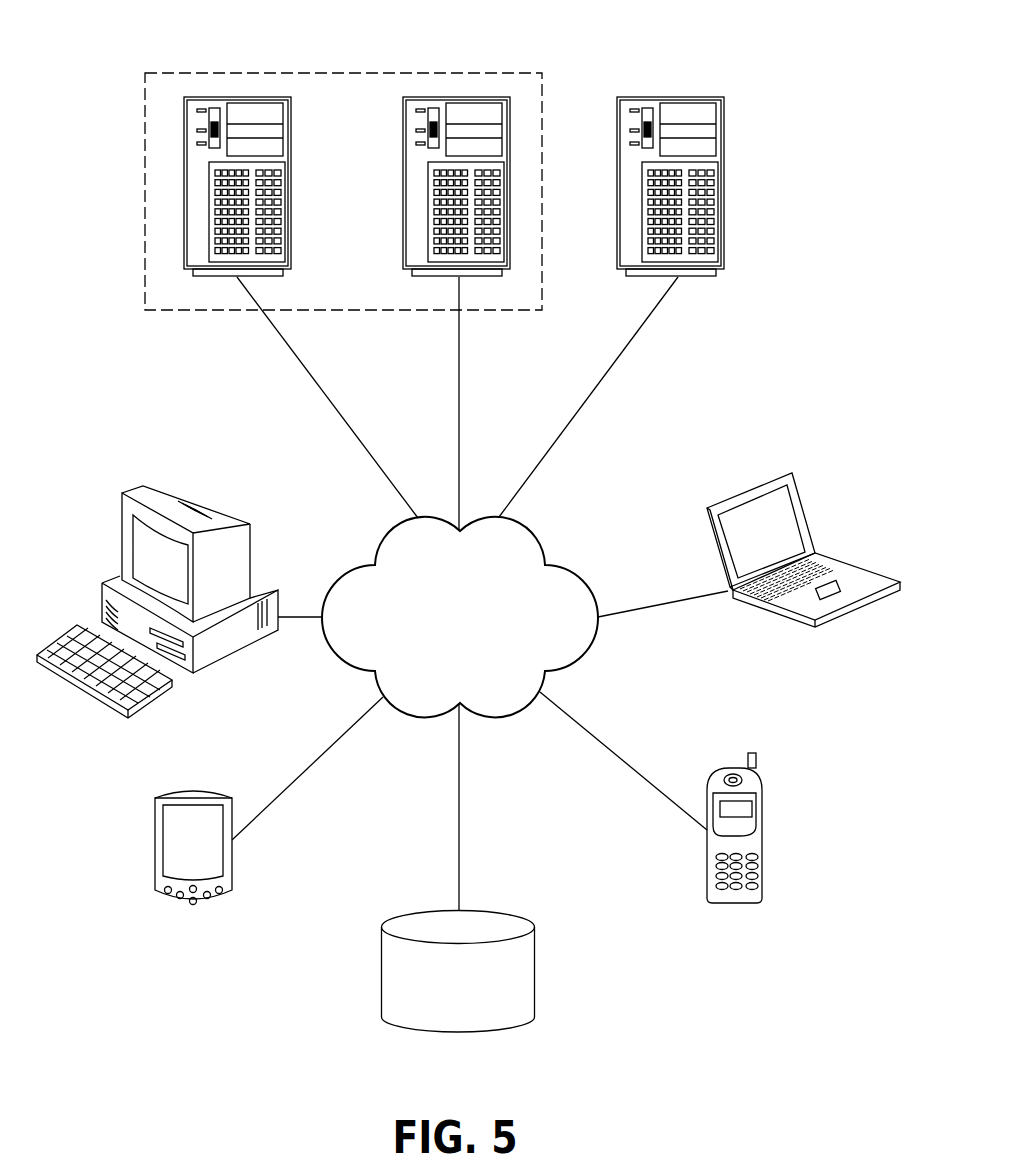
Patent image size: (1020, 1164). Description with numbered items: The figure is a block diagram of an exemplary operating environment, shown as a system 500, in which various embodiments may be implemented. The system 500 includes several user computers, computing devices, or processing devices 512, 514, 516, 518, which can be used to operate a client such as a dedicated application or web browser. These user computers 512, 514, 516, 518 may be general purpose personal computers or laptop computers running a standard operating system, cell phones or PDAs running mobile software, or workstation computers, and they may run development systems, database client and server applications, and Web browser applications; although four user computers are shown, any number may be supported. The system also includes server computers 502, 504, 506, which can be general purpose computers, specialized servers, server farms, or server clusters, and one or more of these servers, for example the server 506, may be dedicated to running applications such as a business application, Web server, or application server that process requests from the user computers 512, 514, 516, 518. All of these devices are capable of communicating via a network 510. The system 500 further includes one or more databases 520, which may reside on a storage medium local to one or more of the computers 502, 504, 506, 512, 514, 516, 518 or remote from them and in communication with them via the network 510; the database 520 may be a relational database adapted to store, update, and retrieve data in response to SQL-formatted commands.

The system 500 is at (810, 117).
The server computer 502 is at (220, 95).
The server computer 504 is at (469, 95).
The server computer 506 is at (727, 180).
The network 510 is at (460, 617).
The user computer 512 is at (170, 493).
The user computer 514 is at (758, 483).
The user computer 516 is at (733, 903).
The user computer 518 is at (193, 907).
The database 520 is at (458, 972).